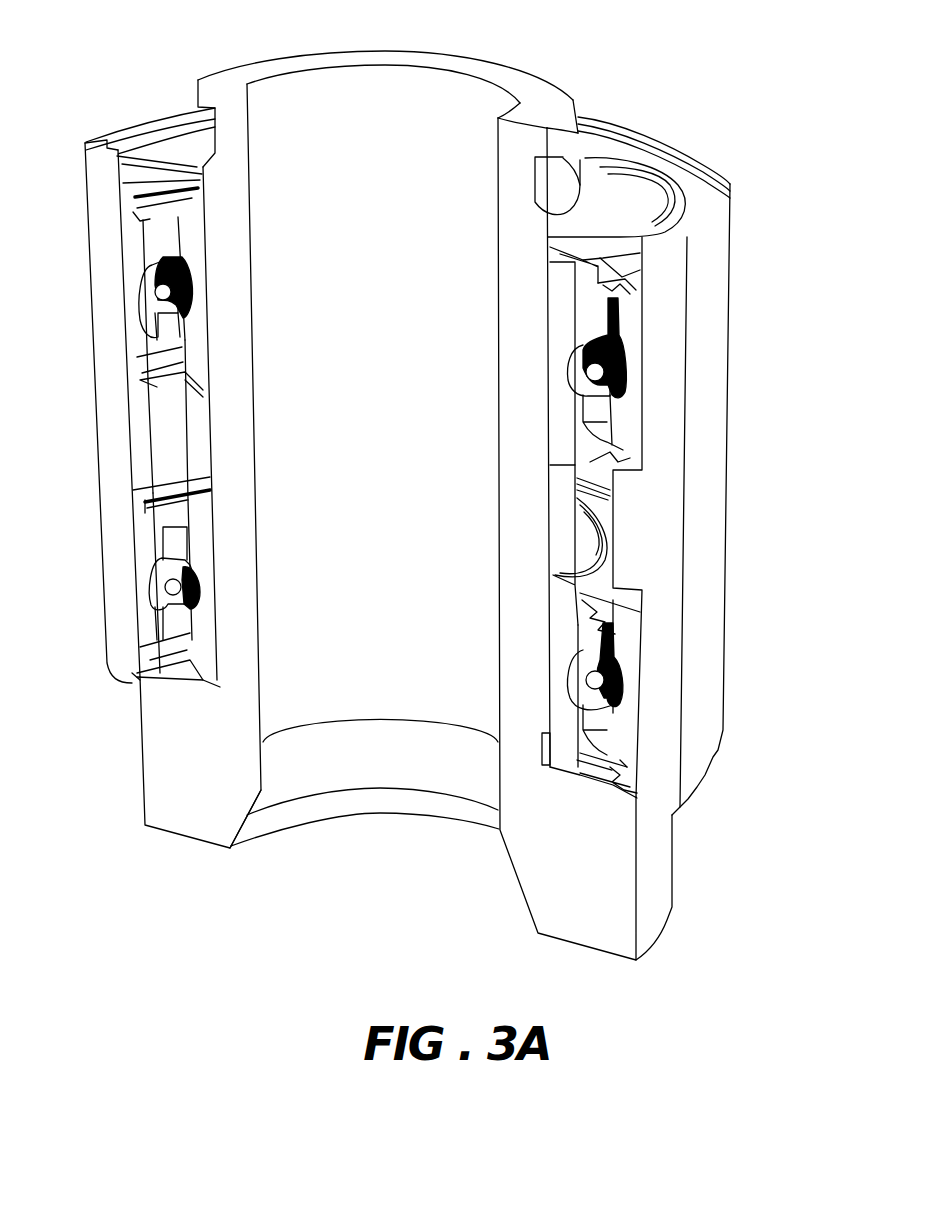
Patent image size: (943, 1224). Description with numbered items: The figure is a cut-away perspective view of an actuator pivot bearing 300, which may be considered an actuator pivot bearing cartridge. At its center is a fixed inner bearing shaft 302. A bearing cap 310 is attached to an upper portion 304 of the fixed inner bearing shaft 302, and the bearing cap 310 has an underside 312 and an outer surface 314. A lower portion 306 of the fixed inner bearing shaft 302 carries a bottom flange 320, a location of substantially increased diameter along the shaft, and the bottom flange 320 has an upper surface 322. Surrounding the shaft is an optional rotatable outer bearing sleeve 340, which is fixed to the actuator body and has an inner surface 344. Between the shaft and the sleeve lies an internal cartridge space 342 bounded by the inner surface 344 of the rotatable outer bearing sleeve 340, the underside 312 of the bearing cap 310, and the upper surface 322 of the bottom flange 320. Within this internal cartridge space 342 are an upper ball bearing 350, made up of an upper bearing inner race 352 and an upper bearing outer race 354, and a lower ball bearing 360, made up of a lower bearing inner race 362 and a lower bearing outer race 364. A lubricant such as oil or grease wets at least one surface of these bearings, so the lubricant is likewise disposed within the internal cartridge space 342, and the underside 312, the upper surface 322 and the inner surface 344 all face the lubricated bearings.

The actuator pivot bearing 300 is at (623, 69).
The fixed inner bearing shaft 302 is at (277, 95).
The upper portion 304 is at (235, 189).
The lower portion 306 is at (233, 780).
The bearing cap 310 is at (622, 248).
The underside 312 is at (603, 258).
The outer surface 314 is at (633, 221).
The bottom flange 320 is at (183, 693).
The upper surface 322 is at (590, 772).
The rotatable outer bearing sleeve 340 is at (642, 545).
The internal cartridge space 342 is at (600, 470).
The inner surface 344 is at (182, 442).
The upper ball bearing 350 is at (583, 364).
The upper bearing inner race 352 is at (566, 320).
The upper bearing outer race 354 is at (630, 338).
The lower ball bearing 360 is at (580, 680).
The lower bearing inner race 362 is at (563, 633).
The lower bearing outer race 364 is at (625, 645).